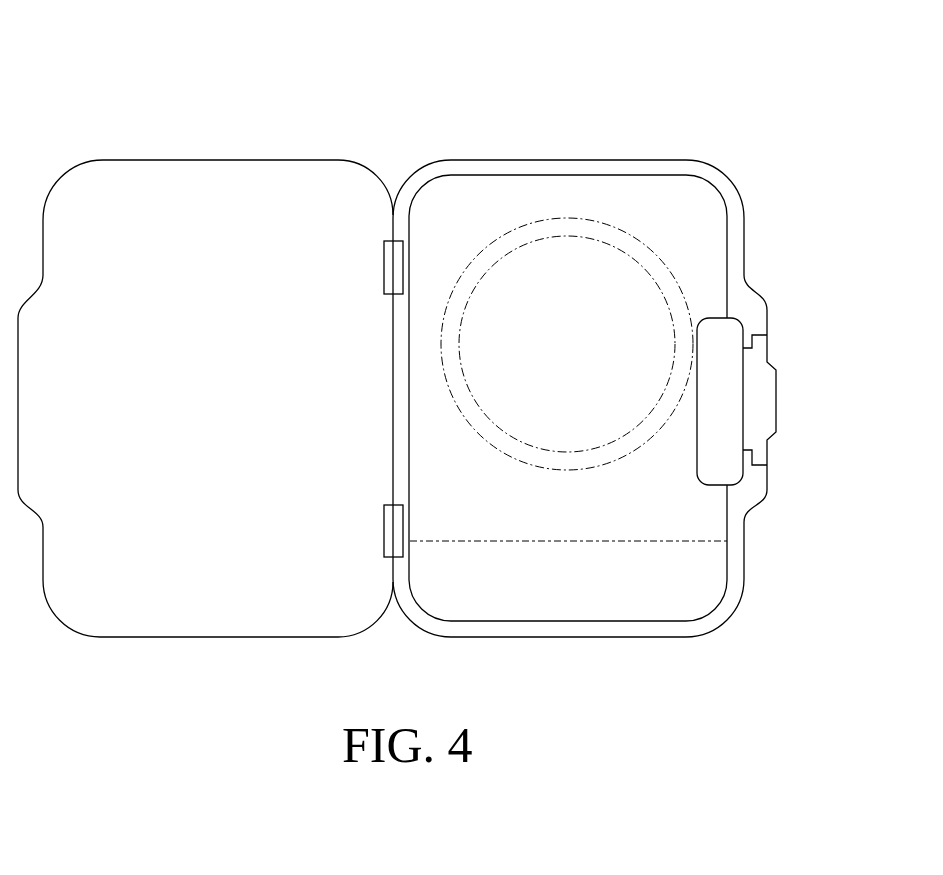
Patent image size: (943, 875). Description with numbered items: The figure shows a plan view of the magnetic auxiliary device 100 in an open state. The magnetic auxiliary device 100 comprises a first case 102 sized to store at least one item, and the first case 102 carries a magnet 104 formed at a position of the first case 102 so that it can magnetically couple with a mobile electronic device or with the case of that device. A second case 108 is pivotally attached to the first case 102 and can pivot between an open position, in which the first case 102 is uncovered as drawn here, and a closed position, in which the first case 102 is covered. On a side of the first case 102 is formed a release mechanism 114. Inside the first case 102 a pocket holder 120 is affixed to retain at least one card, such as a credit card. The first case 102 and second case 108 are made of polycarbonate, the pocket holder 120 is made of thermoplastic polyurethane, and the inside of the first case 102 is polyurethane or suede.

The magnetic auxiliary device 100 is at (726, 34).
The first case 102 is at (692, 218).
The magnet 104 is at (553, 218).
The second case 108 is at (78, 200).
The release mechanism 114 is at (763, 395).
The pocket holder 120 is at (670, 542).